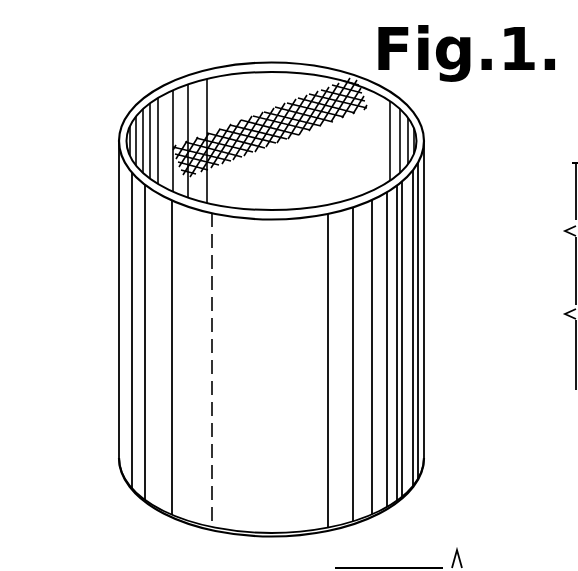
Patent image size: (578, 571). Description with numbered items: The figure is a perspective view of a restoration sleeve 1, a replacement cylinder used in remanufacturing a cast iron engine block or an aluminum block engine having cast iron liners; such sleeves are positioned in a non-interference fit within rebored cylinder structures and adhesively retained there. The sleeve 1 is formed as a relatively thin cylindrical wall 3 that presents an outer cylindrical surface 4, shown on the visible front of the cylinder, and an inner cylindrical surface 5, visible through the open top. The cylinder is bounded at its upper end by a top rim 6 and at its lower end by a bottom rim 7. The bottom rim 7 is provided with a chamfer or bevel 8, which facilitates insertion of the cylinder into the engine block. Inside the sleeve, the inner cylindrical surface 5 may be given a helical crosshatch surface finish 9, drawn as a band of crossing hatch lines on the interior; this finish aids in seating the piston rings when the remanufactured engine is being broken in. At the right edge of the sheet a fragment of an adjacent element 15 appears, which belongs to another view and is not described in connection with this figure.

The restoration sleeve 1 is at (97, 372).
The cylindrical wall 3 is at (135, 244).
The outer cylindrical surface 4 is at (276, 331).
The inner cylindrical surface 5 is at (238, 83).
The top rim 6 is at (204, 73).
The bottom rim 7 is at (178, 525).
The chamfer 8 is at (242, 536).
The helical crosshatch surface finish 9 is at (283, 140).
The adjacent element 15 is at (574, 345).